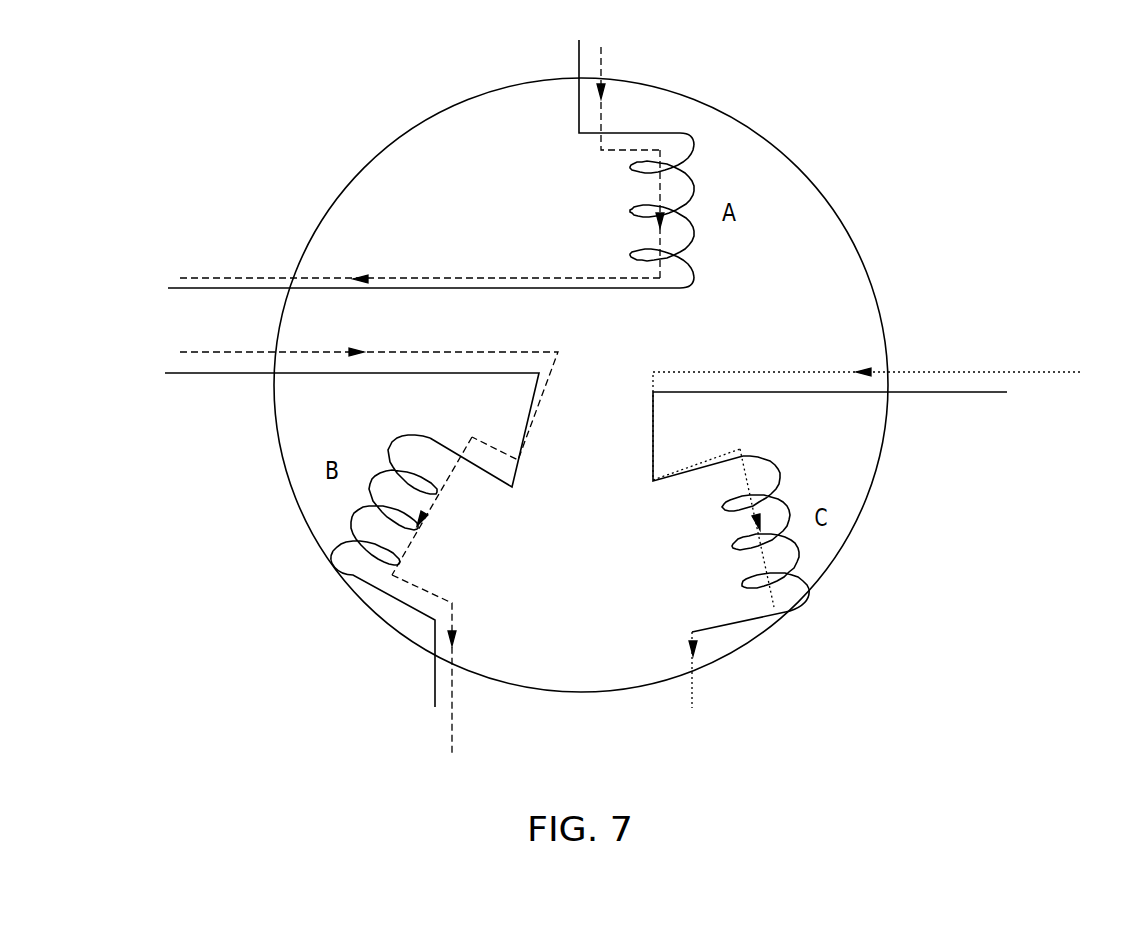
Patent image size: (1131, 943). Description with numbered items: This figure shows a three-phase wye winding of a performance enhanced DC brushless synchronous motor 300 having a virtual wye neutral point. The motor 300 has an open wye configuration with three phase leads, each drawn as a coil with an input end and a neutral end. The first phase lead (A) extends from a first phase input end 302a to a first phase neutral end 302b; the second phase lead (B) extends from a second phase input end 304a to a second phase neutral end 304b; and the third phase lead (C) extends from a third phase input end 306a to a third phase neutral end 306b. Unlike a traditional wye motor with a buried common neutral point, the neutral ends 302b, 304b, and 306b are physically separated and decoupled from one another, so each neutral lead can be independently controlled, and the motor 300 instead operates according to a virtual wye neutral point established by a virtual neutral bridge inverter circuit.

The performance enhanced DC brushless synchronous motor 300 is at (370, 101).
The first phase input end 302a is at (578, 72).
The first phase neutral end 302b is at (175, 285).
The second phase input end 304a is at (433, 677).
The second phase neutral end 304b is at (203, 373).
The third phase input end 306a is at (747, 620).
The third phase neutral end 306b is at (980, 392).